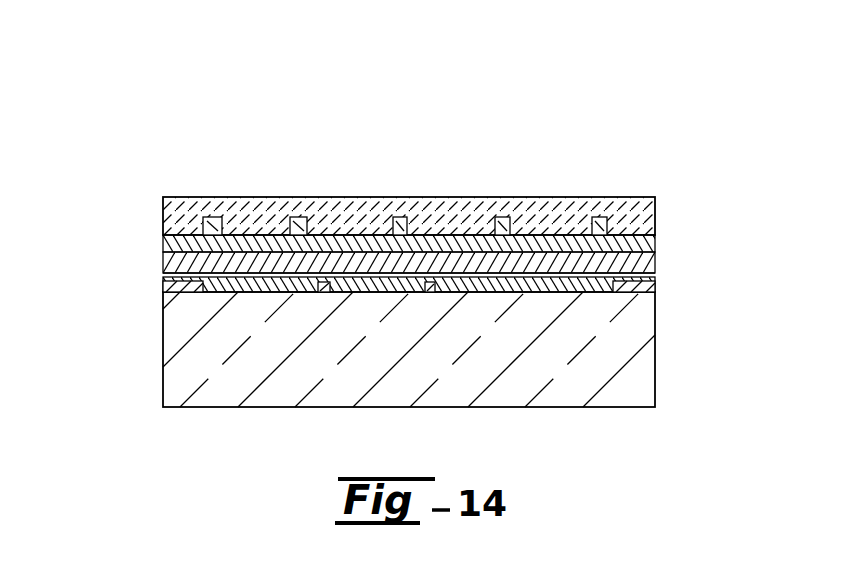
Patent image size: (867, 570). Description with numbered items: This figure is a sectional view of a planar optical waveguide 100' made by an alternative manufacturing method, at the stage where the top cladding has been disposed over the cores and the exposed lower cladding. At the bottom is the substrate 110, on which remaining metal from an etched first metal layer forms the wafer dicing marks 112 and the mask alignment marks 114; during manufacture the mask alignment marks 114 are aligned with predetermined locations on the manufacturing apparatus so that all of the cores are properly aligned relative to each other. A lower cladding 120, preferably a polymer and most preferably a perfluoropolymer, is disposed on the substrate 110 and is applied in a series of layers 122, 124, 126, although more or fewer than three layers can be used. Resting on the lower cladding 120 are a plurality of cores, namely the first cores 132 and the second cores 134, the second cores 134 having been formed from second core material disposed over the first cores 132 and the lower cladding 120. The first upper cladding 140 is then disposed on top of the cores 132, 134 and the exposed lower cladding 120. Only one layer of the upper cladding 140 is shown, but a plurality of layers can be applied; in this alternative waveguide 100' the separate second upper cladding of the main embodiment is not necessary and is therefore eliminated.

The waveguide 100' is at (422, 240).
The substrate 110 is at (655, 378).
The wafer dicing marks 112 is at (182, 293).
The mask alignment marks 114 is at (406, 291).
The lower cladding 120 is at (422, 260).
The layer 122 is at (655, 275).
The layer 124 is at (655, 259).
The layer 126 is at (655, 243).
The first core 132 is at (403, 198).
The second core 134 is at (220, 198).
The first upper cladding 140 is at (177, 198).